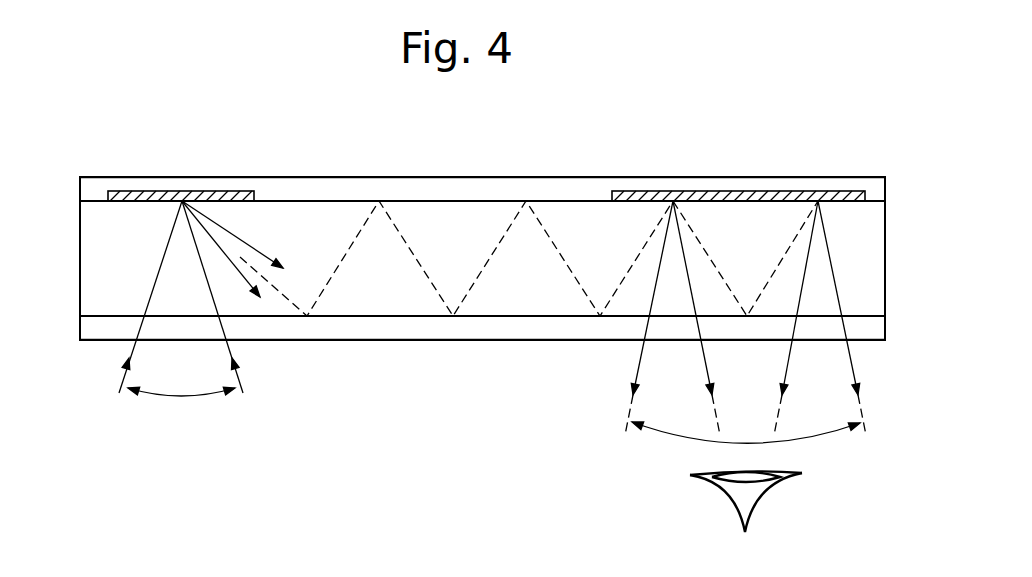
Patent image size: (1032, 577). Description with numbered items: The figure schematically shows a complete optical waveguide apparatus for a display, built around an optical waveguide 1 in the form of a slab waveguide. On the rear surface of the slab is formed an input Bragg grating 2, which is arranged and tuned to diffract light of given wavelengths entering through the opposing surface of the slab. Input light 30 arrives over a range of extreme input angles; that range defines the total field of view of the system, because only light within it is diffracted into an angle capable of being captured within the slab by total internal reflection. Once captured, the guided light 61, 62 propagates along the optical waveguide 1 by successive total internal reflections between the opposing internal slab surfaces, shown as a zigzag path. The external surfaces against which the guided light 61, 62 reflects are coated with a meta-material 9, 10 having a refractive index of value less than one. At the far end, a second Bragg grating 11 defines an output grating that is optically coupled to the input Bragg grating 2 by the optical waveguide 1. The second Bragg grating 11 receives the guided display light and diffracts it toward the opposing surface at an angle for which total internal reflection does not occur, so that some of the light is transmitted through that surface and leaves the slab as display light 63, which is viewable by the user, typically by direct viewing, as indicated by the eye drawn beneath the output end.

The optical waveguide 1 is at (862, 231).
The input Bragg grating 2 is at (155, 191).
The meta-material coating 9 is at (548, 187).
The meta-material coating 10 is at (405, 335).
The second Bragg grating 11 is at (797, 192).
The input light 30 is at (222, 392).
The guided light 61 is at (402, 217).
The guided light 62 is at (583, 222).
The display light 63 is at (668, 432).